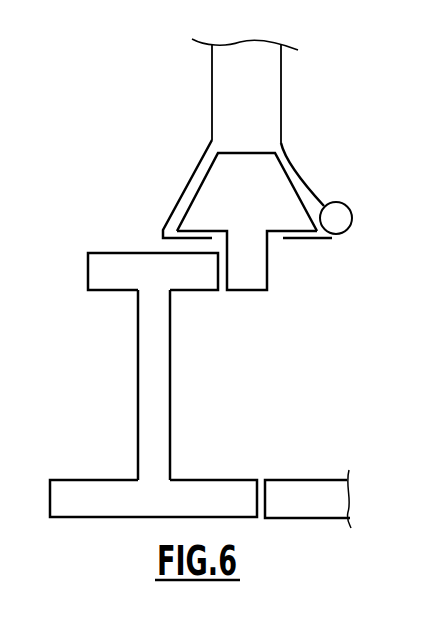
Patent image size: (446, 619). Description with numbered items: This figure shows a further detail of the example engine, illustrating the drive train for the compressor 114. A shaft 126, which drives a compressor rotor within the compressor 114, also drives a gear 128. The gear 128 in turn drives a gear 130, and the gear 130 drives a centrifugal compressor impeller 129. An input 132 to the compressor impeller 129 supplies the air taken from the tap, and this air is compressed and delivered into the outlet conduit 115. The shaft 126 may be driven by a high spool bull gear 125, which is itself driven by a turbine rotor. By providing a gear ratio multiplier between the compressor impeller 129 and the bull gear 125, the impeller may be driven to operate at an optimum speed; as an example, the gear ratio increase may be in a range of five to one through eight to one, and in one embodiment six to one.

The compressor 114 is at (352, 131).
The outlet conduit 115 is at (342, 219).
The bull gear 125 is at (302, 490).
The shaft 126 is at (158, 417).
The gear 128 is at (118, 268).
The centrifugal compressor impeller 129 is at (222, 193).
The gear 130 is at (260, 278).
The input 132 is at (257, 82).